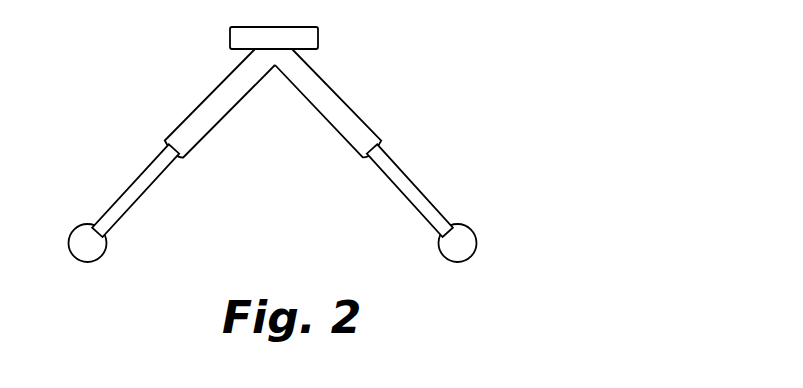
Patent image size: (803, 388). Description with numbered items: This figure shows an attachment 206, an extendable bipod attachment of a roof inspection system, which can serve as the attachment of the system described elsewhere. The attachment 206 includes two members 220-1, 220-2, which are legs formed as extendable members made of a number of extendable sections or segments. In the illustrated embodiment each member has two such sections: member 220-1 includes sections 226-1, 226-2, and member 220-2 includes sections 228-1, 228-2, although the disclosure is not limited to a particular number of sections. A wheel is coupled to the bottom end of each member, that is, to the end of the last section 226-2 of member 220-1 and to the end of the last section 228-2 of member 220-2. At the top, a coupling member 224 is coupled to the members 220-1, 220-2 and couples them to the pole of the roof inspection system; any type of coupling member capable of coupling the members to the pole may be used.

The attachment 206 is at (443, 27).
The coupling member 224 is at (280, 32).
The member 220-1 is at (392, 164).
The member 220-2 is at (156, 164).
The section 226-1 is at (348, 118).
The section 226-2 is at (415, 190).
The section 228-1 is at (195, 120).
The section 228-2 is at (130, 187).